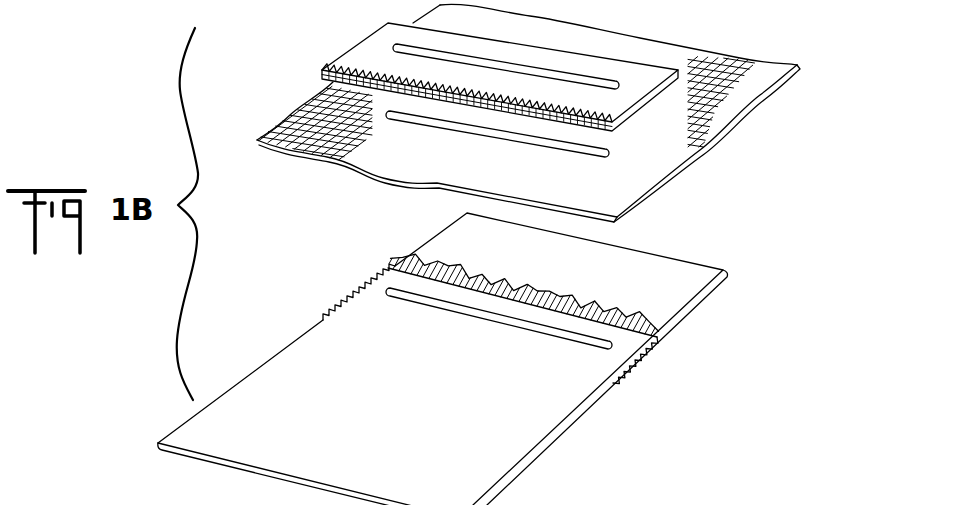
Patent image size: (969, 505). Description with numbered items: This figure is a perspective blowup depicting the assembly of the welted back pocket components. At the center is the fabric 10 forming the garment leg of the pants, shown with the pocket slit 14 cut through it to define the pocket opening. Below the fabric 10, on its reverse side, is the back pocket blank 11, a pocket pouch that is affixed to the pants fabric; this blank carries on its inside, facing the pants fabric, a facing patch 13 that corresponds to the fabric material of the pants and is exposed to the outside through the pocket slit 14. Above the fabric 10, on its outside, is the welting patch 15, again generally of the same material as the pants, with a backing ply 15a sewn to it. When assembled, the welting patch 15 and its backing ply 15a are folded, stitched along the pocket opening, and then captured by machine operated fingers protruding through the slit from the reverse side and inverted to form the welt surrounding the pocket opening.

The fabric 10 is at (752, 72).
The back pocket blank 11 is at (273, 356).
The facing patch 13 is at (571, 295).
The pocket slit 14 is at (462, 128).
The welting patch 15 is at (641, 104).
The backing ply 15a is at (528, 58).